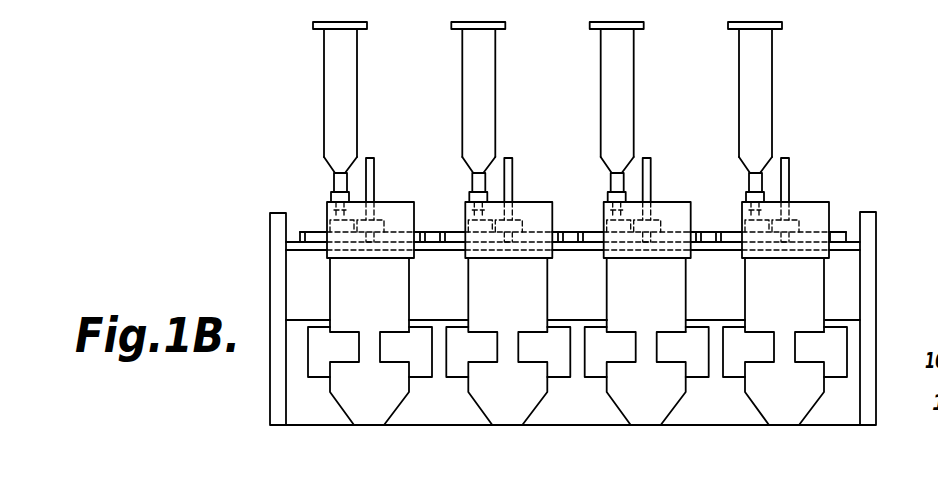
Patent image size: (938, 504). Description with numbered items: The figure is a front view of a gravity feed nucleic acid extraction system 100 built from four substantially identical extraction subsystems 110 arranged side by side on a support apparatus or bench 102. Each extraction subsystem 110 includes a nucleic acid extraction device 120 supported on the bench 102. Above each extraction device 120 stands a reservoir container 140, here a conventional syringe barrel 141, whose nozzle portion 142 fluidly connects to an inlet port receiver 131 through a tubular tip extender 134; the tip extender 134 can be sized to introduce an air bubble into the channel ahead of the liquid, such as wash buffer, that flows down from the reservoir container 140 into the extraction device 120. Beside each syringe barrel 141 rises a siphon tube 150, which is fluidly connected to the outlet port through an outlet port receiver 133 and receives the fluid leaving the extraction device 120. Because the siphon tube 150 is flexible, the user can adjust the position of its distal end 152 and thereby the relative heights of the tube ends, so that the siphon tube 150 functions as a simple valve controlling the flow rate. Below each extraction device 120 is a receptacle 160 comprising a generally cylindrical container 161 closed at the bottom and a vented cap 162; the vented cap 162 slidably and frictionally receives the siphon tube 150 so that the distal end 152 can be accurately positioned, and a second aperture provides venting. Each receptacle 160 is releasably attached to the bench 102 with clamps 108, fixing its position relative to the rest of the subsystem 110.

The gravity feed nucleic acid extraction system 100 is at (863, 115).
The support apparatus or bench 102 is at (877, 229).
The clamps 108 is at (421, 374).
The extraction subsystem 110 is at (824, 154).
The nucleic acid extraction device 120 is at (840, 229).
The inlet port receiver 131 is at (332, 217).
The outlet port receiver 133 is at (382, 223).
The tubular tip extender 134 is at (334, 183).
The reservoir container 140 is at (357, 81).
The syringe barrel 141 is at (730, 94).
The nozzle portion 142 is at (335, 171).
The siphon tube 150 is at (373, 155).
The distal end 152 is at (787, 258).
The receptacle 160 is at (385, 302).
The generally cylindrical container 161 is at (686, 283).
The vented cap 162 is at (812, 203).